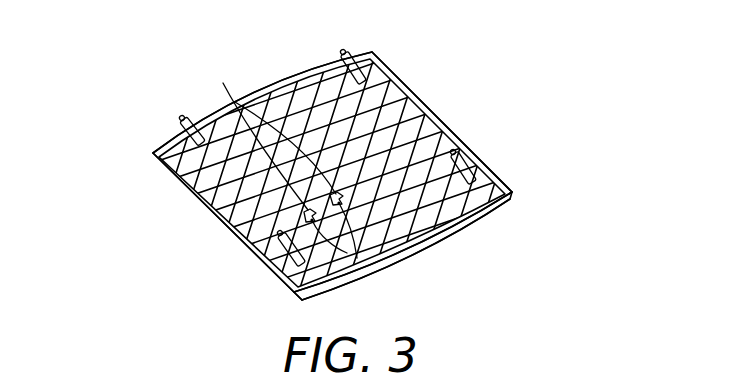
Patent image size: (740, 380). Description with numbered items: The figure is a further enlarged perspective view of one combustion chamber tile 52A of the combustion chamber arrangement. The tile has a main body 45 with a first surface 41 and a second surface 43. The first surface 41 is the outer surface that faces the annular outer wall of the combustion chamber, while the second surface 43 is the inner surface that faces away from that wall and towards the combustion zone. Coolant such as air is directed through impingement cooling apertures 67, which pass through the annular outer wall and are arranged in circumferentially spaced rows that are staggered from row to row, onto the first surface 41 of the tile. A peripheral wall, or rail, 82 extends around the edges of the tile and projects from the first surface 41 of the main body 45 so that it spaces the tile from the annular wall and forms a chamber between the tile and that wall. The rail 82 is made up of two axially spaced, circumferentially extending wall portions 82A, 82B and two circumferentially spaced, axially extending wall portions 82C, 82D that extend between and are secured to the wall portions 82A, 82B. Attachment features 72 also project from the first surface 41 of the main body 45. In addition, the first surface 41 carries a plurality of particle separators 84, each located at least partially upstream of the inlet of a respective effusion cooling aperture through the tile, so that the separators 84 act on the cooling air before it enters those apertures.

The first surface 41 is at (370, 113).
The second surface 43 is at (327, 283).
The main body 45 is at (232, 168).
The combustion chamber tile 52A is at (408, 128).
The impingement cooling apertures 67 is at (357, 258).
The attachment features 72 is at (181, 117).
The peripheral wall 82 is at (212, 210).
The circumferentially extending wall portion 82A is at (280, 82).
The circumferentially extending wall portion 82B is at (407, 233).
The axially extending wall portion 82C is at (233, 207).
The axially extending wall portion 82D is at (450, 127).
The particle separator 84 is at (223, 83).